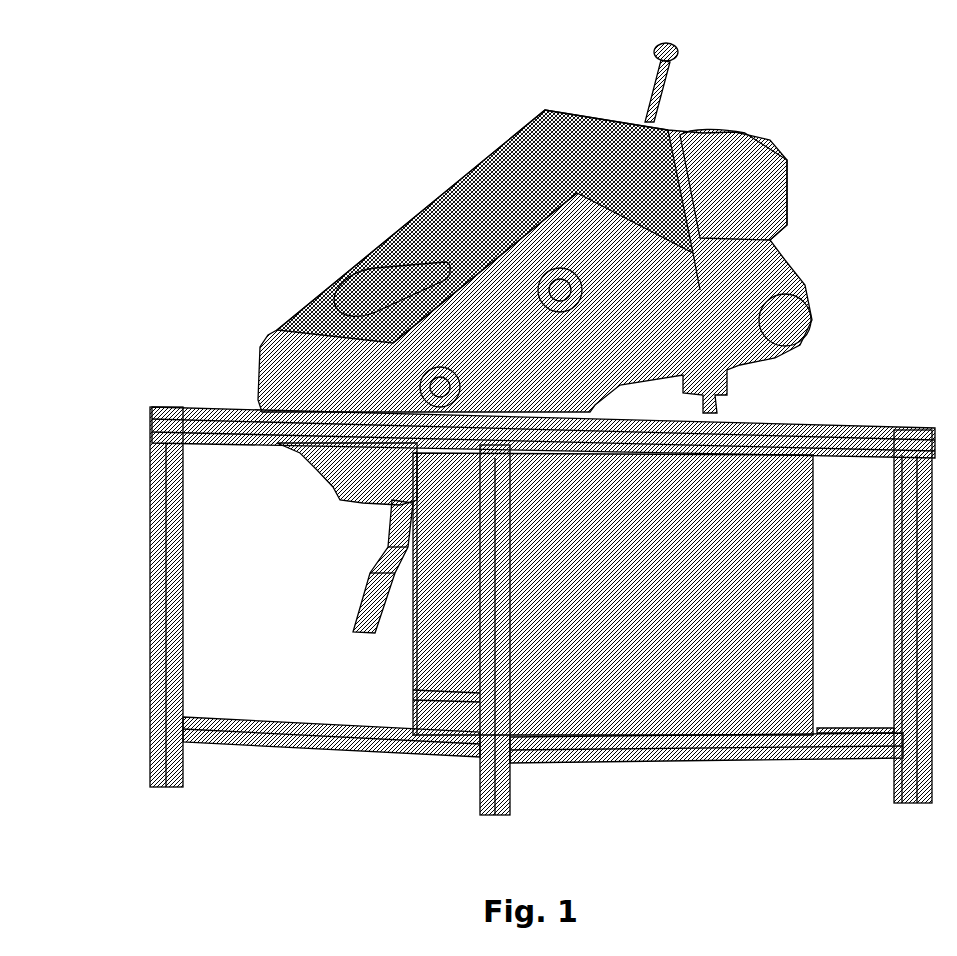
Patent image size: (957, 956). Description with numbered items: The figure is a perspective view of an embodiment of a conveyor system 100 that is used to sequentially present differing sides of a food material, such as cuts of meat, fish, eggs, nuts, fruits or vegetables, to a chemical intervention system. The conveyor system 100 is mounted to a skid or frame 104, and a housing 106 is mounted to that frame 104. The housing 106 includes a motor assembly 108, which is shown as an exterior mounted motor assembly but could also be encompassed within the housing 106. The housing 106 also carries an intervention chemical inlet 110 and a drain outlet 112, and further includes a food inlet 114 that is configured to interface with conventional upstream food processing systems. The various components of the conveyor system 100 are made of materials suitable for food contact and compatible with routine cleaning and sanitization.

The conveyor system 100 is at (212, 92).
The skid or frame 104 is at (153, 683).
The housing 106 is at (466, 210).
The motor assembly 108 is at (760, 190).
The intervention chemical inlet 110 is at (680, 50).
The drain outlet 112 is at (358, 635).
The food inlet 114 is at (365, 300).